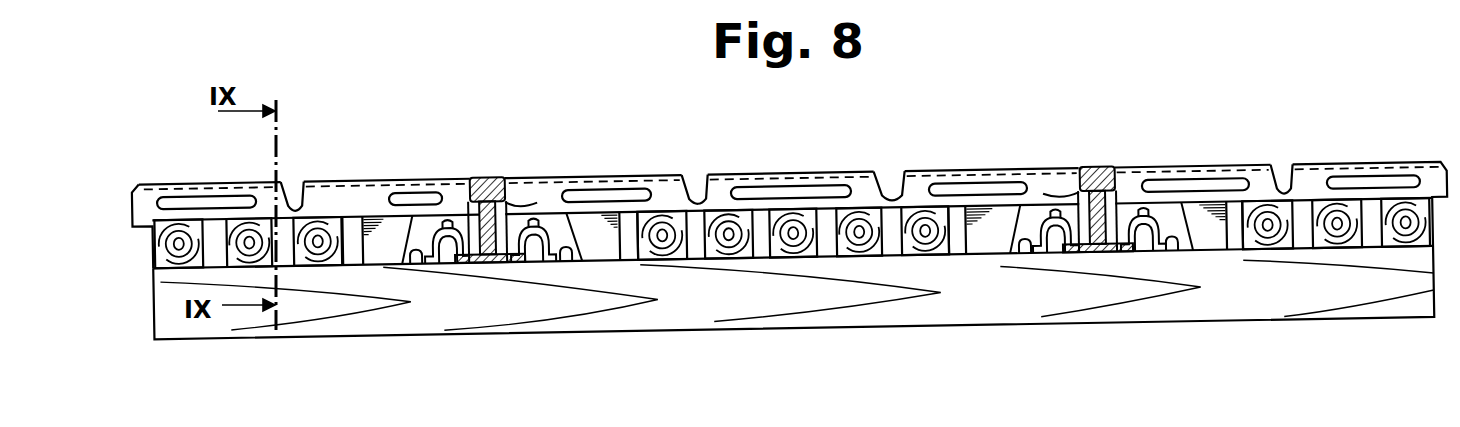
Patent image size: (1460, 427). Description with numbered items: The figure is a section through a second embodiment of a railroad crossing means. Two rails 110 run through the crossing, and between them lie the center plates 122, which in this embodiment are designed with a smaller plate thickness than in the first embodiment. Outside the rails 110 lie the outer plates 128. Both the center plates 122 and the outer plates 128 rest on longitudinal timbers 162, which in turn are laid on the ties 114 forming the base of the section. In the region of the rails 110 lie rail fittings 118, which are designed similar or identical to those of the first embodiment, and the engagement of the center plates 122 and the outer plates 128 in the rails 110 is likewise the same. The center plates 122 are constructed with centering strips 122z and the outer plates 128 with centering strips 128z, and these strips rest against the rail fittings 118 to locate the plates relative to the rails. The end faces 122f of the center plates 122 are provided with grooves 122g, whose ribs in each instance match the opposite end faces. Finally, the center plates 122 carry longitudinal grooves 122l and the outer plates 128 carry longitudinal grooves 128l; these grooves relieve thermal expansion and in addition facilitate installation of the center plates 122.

The rails 110 is at (489, 175).
The ties 114 is at (865, 295).
The rail fittings 118 is at (383, 235).
The center plates 122 is at (797, 172).
The end faces 122f is at (533, 195).
The grooves 122g is at (633, 195).
The longitudinal grooves 122l is at (706, 197).
The centering strips 122z is at (632, 233).
The outer plates 128 is at (182, 188).
The longitudinal grooves 128l is at (305, 203).
The centering strips 128z is at (353, 232).
The longitudinal timbers 162 is at (302, 252).